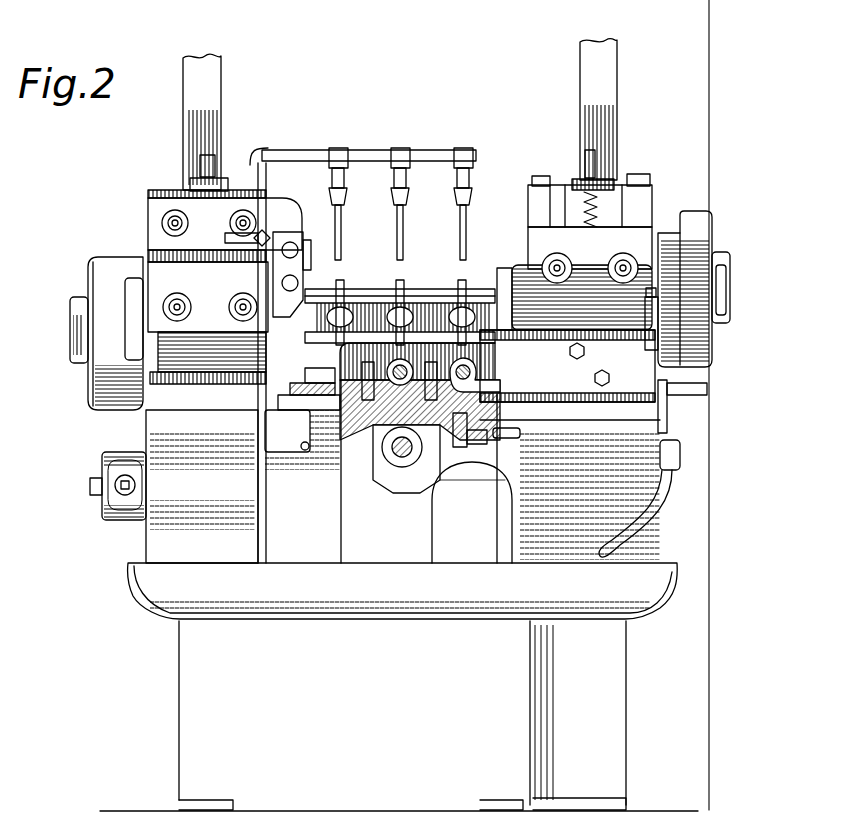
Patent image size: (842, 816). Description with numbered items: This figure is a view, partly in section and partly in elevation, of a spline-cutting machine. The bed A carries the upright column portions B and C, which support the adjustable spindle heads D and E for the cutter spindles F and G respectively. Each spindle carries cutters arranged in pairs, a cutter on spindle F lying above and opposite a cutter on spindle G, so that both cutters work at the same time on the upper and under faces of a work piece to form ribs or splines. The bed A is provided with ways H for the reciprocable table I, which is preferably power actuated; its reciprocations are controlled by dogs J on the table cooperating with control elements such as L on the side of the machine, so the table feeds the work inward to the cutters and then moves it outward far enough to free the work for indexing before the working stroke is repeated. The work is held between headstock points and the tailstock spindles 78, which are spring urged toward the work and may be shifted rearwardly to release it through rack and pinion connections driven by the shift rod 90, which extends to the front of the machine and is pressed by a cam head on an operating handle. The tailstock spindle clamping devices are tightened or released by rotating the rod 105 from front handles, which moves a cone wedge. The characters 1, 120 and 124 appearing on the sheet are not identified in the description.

The section line 1 is at (672, 20).
The bed A is at (172, 584).
The upright column portion B is at (646, 228).
The upright column portion C is at (150, 192).
The adjustable spindle head D is at (635, 242).
The adjustable spindle head E is at (152, 272).
The cutter spindle F is at (470, 300).
The cutter spindle G is at (285, 382).
The ways H is at (370, 433).
The reciprocable table I is at (360, 430).
The dogs J is at (660, 412).
The control element L is at (472, 415).
The tailstock spindle 78 is at (460, 300).
The shift rod 90 is at (492, 368).
The rod 105 is at (408, 382).
The bearing 120 is at (362, 272).
The rod 124 is at (430, 290).